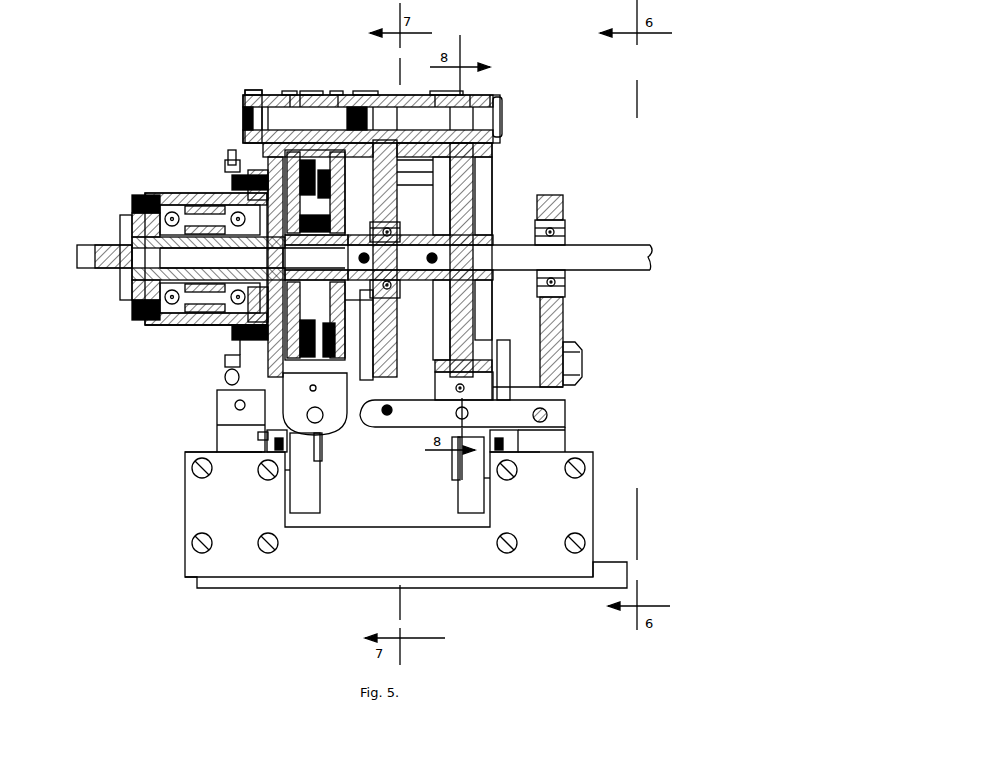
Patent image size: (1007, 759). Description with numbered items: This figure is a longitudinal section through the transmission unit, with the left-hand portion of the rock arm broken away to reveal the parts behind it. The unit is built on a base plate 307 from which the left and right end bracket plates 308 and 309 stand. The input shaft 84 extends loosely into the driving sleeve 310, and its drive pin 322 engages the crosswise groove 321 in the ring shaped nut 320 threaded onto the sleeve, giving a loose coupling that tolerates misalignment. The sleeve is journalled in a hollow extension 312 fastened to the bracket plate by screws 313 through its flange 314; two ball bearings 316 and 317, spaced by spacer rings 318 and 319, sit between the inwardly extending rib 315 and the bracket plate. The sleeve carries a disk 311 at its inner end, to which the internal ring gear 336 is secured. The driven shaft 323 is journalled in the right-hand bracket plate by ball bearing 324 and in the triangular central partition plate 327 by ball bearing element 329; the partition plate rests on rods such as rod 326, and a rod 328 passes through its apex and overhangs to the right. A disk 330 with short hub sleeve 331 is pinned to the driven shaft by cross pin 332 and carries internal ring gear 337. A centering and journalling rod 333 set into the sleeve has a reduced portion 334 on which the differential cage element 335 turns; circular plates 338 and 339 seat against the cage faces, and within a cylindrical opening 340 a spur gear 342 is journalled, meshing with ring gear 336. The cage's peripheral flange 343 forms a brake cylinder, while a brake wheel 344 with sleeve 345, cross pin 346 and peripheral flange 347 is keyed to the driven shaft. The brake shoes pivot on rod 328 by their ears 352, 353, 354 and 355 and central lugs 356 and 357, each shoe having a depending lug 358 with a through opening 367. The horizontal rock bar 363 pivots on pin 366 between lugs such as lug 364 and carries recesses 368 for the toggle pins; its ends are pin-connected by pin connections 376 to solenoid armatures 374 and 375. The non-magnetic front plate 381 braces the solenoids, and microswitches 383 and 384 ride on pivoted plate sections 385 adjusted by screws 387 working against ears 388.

The input shaft 84 is at (77, 262).
The base plate 307 is at (468, 590).
The left-hand end bracket plate 308 is at (234, 407).
The right-hand end bracket plate 309 is at (555, 330).
The sleeve 310 is at (132, 276).
The disk 311 is at (250, 183).
The hollow extension 312 is at (180, 195).
The screws 313 is at (226, 165).
The flange 314 is at (228, 152).
The inwardly extending flange or rib 315 is at (145, 197).
The ball bearing 316 is at (150, 320).
The ball bearing 317 is at (232, 330).
The spacer ring 318 is at (220, 243).
The spacer ring 319 is at (232, 340).
The ring shaped nut 320 is at (145, 314).
The crosswise extending groove 321 is at (131, 210).
The drive pin 322 is at (122, 232).
The driven shaft 323 is at (628, 247).
The ball bearing 324 is at (555, 230).
The rod 326 is at (585, 365).
The central partition plate 327 is at (400, 95).
The rod 328 is at (478, 117).
The ball bearing element 329 is at (392, 232).
The disk 330 is at (398, 160).
The short hub sleeve 331 is at (395, 218).
The cross pin 332 is at (370, 258).
The centering and journalling rod 333 is at (202, 258).
The reduced size portion 334 is at (308, 267).
The cage element 335 is at (380, 318).
The internal ring gear 336 is at (240, 175).
The internal ring gear 337 is at (398, 172).
The circular plate 338 is at (280, 270).
The circular plate 339 is at (395, 305).
The circular opening 340 is at (398, 186).
The spur gear 342 is at (310, 95).
The peripheral circular flange 343 is at (258, 93).
The brake wheel 344 is at (500, 296).
The sleeve 345 is at (398, 290).
The cross pin 346 is at (437, 257).
The circular peripheral flange 347 is at (493, 152).
The ear 352 is at (290, 95).
The ear 353 is at (338, 95).
The ear 354 is at (435, 95).
The ear 355 is at (490, 95).
The central lug 356 is at (300, 95).
The central lug 357 is at (470, 95).
The depending lug 358 is at (478, 393).
The rock bar 363 is at (445, 445).
The lug 364 is at (372, 422).
The pin 366 is at (393, 411).
The through opening 367 is at (322, 455).
The recess 368 is at (468, 413).
The armature 374 is at (200, 453).
The armature 375 is at (567, 440).
The pin connection 376 is at (547, 415).
The front plate 381 is at (389, 514).
The microswitch 383 is at (320, 508).
The microswitch 384 is at (458, 500).
The plate or bar section 385 is at (287, 472).
The adjusting screw 387 is at (267, 438).
The ear 388 is at (255, 455).